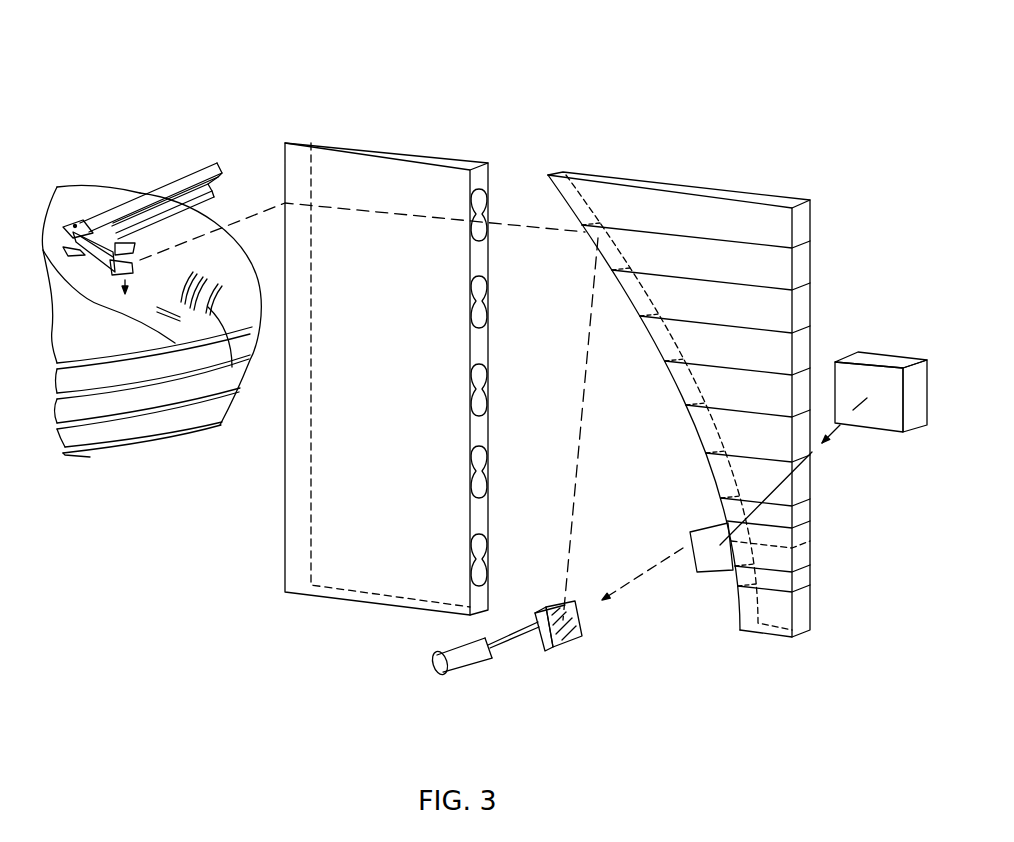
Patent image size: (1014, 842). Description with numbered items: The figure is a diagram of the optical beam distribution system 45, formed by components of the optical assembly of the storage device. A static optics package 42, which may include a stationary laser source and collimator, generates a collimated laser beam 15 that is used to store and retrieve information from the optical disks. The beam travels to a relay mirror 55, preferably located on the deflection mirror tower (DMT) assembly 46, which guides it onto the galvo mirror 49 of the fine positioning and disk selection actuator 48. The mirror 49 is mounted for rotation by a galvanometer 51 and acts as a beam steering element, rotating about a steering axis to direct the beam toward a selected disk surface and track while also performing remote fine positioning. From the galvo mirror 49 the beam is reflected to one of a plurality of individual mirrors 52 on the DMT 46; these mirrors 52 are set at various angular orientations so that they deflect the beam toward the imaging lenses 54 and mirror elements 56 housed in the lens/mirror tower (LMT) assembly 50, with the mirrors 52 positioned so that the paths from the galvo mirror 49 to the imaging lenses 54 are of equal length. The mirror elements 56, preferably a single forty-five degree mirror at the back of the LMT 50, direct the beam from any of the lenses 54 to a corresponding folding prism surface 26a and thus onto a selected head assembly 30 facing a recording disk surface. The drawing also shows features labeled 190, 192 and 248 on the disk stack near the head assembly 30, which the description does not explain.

The optical beam distribution system 45 is at (237, 132).
The folding prism surface 26a is at (116, 278).
The head assembly 30 is at (132, 268).
The first groove 190 is at (173, 343).
The second groove 192 is at (188, 322).
The helical ridges 248 is at (240, 385).
The lens/mirror tower (LMT) assembly 50 is at (283, 212).
The mirror elements 56 is at (300, 340).
The imaging lenses 54 is at (478, 398).
The deflection mirror tower (DMT) assembly 46 is at (825, 238).
The individual mirrors 52 is at (678, 386).
The relay mirror 55 is at (707, 528).
The static optics package 42 is at (897, 436).
The laser beam 15 is at (655, 583).
The fine positioning and disk selection actuator 48 is at (567, 648).
The galvo mirror 49 is at (583, 630).
The galvanometer 51 is at (495, 652).